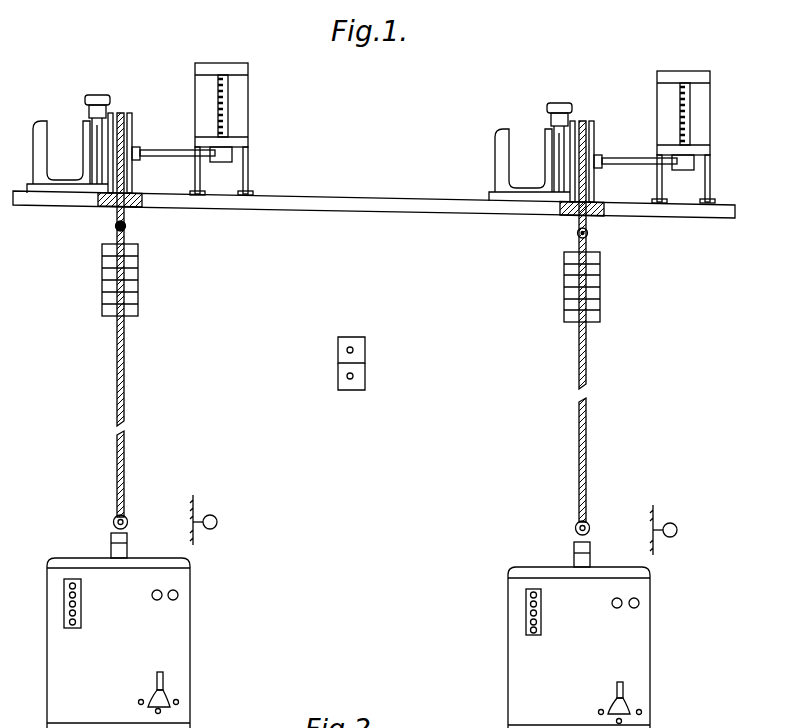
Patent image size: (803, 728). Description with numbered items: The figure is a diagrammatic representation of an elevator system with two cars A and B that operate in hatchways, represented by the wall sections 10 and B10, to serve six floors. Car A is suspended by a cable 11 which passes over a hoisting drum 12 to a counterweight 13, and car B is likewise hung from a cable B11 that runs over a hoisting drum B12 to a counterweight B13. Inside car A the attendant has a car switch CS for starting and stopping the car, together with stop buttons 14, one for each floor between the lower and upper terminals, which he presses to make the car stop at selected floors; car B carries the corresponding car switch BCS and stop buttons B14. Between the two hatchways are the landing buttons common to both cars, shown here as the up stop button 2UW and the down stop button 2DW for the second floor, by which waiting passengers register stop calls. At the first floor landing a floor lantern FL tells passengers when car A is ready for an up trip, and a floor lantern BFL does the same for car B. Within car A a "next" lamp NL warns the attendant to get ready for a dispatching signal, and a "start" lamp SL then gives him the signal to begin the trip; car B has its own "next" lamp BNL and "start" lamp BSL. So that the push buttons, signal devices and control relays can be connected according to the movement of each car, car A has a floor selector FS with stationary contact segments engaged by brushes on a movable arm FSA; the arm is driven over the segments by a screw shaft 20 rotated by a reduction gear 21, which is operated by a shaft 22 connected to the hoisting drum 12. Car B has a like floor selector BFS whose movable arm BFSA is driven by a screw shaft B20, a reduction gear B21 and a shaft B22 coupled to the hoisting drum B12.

The wall sections 10 is at (193, 495).
The cable 11 is at (125, 398).
The hoisting drum 12 is at (133, 128).
The counterweight 13 is at (139, 253).
The stop buttons 14 is at (83, 613).
The screw shaft 20 is at (229, 94).
The reduction gear 21 is at (222, 162).
The shaft 22 is at (167, 157).
The floor selector FS is at (243, 114).
The movable arm FSA is at (243, 143).
The floor lantern FL is at (219, 517).
The "next" lamp NL is at (153, 591).
The "start" lamp SL is at (179, 586).
The car A is at (190, 632).
The car switch CS is at (167, 670).
The up stop button 2UW is at (354, 350).
The down stop button 2DW is at (354, 376).
The wall sections B10 is at (656, 506).
The cable B11 is at (588, 377).
The hoisting drum B12 is at (598, 167).
The counterweight B13 is at (601, 270).
The stop buttons B14 is at (533, 636).
The screw shaft B20 is at (716, 113).
The reduction gear B21 is at (684, 172).
The shaft B22 is at (635, 171).
The floor selector BFS is at (661, 137).
The movable arm BFSA is at (708, 142).
The floor lantern BFL is at (685, 521).
The "next" lamp BNL is at (613, 601).
The "start" lamp BSL is at (638, 614).
The car B is at (650, 640).
The car switch BCS is at (626, 682).